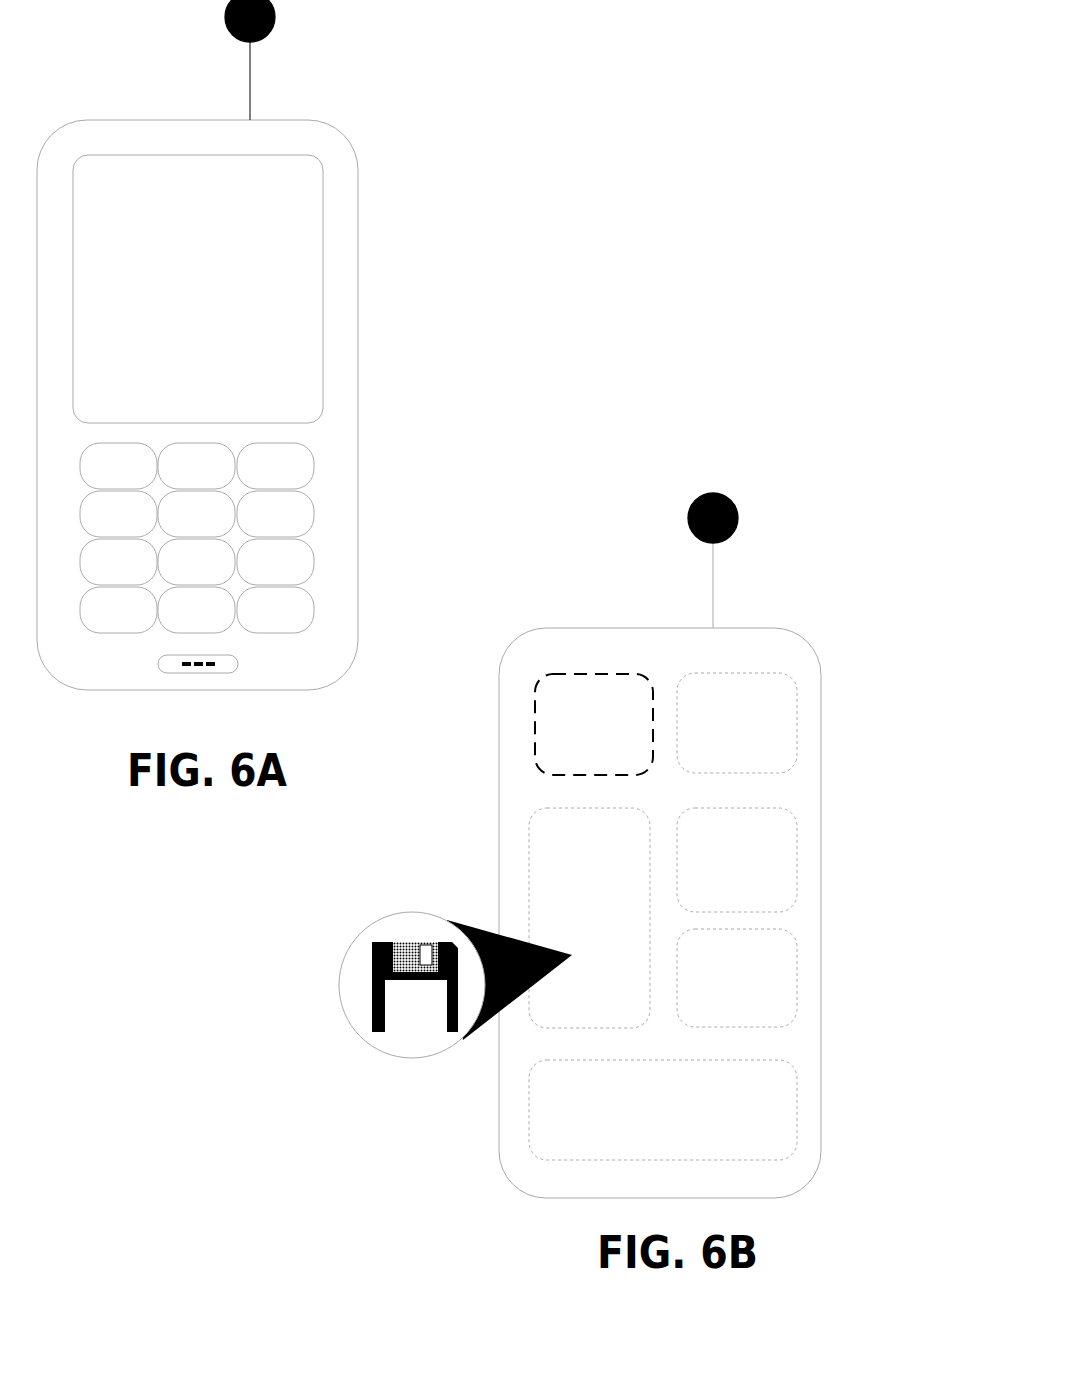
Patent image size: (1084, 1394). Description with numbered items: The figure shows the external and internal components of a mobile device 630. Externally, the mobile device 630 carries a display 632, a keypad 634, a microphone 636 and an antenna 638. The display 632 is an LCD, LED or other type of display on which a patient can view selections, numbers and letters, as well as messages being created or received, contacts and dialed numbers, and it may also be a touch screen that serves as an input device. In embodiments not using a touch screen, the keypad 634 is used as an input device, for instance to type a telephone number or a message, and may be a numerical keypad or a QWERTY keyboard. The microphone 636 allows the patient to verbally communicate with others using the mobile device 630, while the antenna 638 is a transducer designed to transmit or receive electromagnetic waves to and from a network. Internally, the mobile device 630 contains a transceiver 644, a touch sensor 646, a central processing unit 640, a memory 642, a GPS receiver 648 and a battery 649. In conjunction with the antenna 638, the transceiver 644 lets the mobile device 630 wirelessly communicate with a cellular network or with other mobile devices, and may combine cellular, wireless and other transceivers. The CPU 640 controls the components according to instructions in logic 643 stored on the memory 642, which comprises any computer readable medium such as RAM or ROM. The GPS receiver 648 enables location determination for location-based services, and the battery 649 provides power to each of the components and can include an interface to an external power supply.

In FIG. 6A, the mobile device 630 is at (197, 379).
In FIG. 6B, the mobile device 630 is at (660, 887).
In FIG. 6A, the display 632 is at (267, 289).
In FIG. 6A, the keypad 634 is at (268, 540).
In FIG. 6A, the microphone 636 is at (147, 698).
In FIG. 6A, the antenna 638 is at (294, 60).
In FIG. 6B, the antenna 638 is at (758, 560).
In FIG. 6B, the central processing unit (CPU) 640 is at (805, 848).
In FIG. 6B, the memory 642 is at (520, 916).
In FIG. 6B, the logic 643 is at (426, 997).
In FIG. 6B, the transceiver 644 is at (805, 710).
In FIG. 6B, the touch sensor 646 is at (524, 713).
In FIG. 6B, the GPS receiver 648 is at (804, 966).
In FIG. 6B, the battery 649 is at (730, 1097).